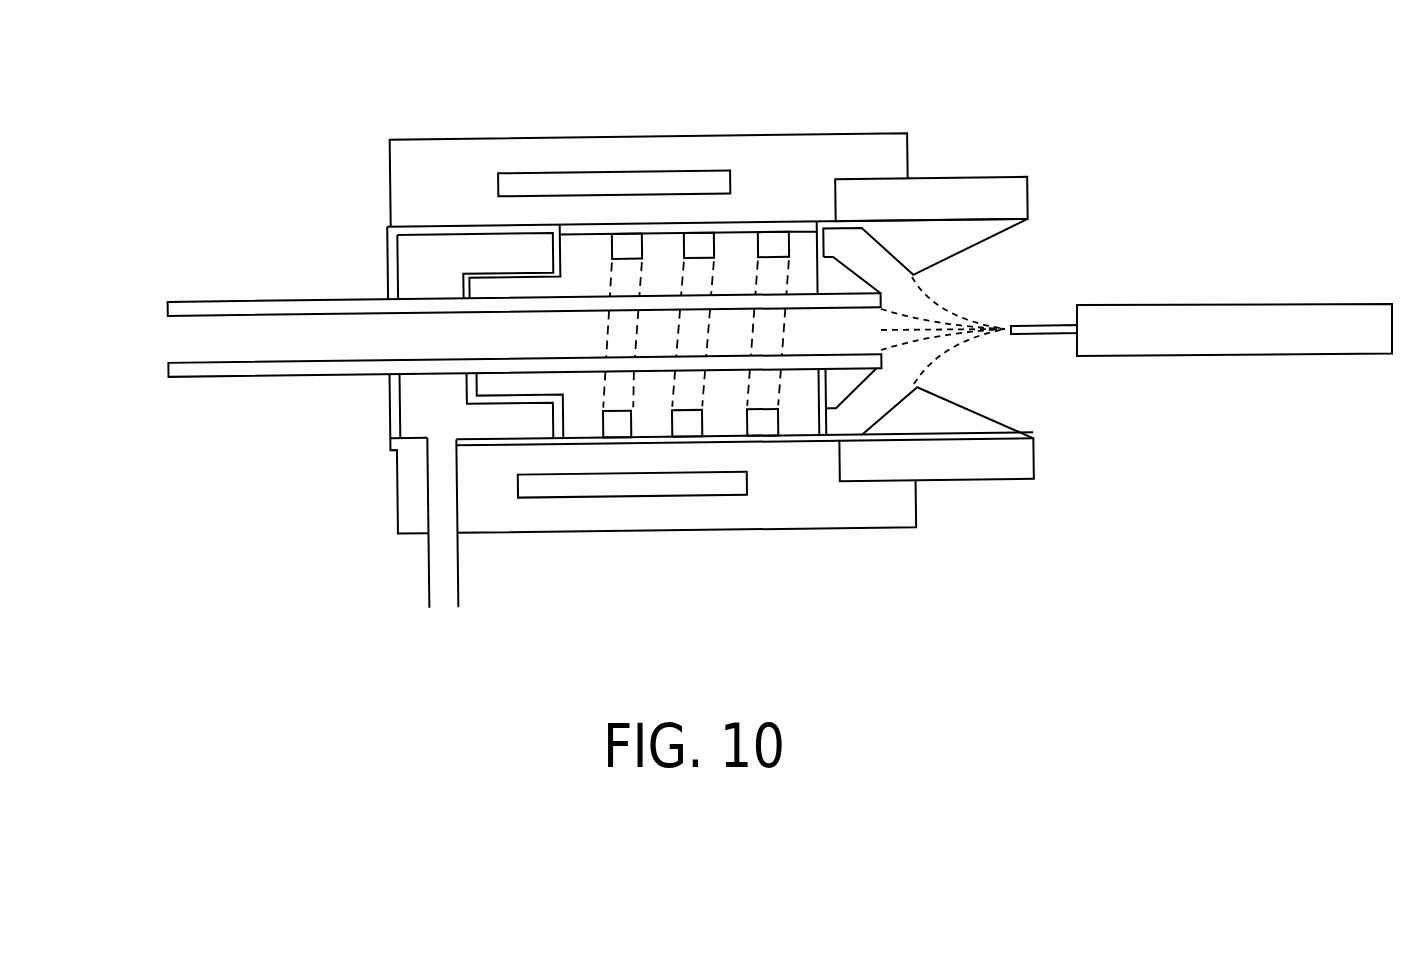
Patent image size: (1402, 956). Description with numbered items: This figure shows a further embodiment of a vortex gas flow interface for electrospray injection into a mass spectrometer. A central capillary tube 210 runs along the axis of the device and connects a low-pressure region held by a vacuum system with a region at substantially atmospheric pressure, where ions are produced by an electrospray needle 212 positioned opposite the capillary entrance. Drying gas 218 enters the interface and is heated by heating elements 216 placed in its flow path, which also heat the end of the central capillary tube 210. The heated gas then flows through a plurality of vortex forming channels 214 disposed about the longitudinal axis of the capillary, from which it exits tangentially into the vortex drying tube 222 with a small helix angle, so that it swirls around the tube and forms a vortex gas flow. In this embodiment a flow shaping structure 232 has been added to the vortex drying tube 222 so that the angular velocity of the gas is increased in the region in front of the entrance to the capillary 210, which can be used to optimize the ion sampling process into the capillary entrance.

The central capillary tube 210 is at (136, 357).
The electrospray needle 212 is at (1044, 322).
The vortex forming channels 214 is at (782, 222).
The heating element 216 is at (605, 168).
The drying gas 218 is at (438, 622).
The vortex drying tube 222 is at (980, 483).
The flow shaping structure 232 is at (975, 410).